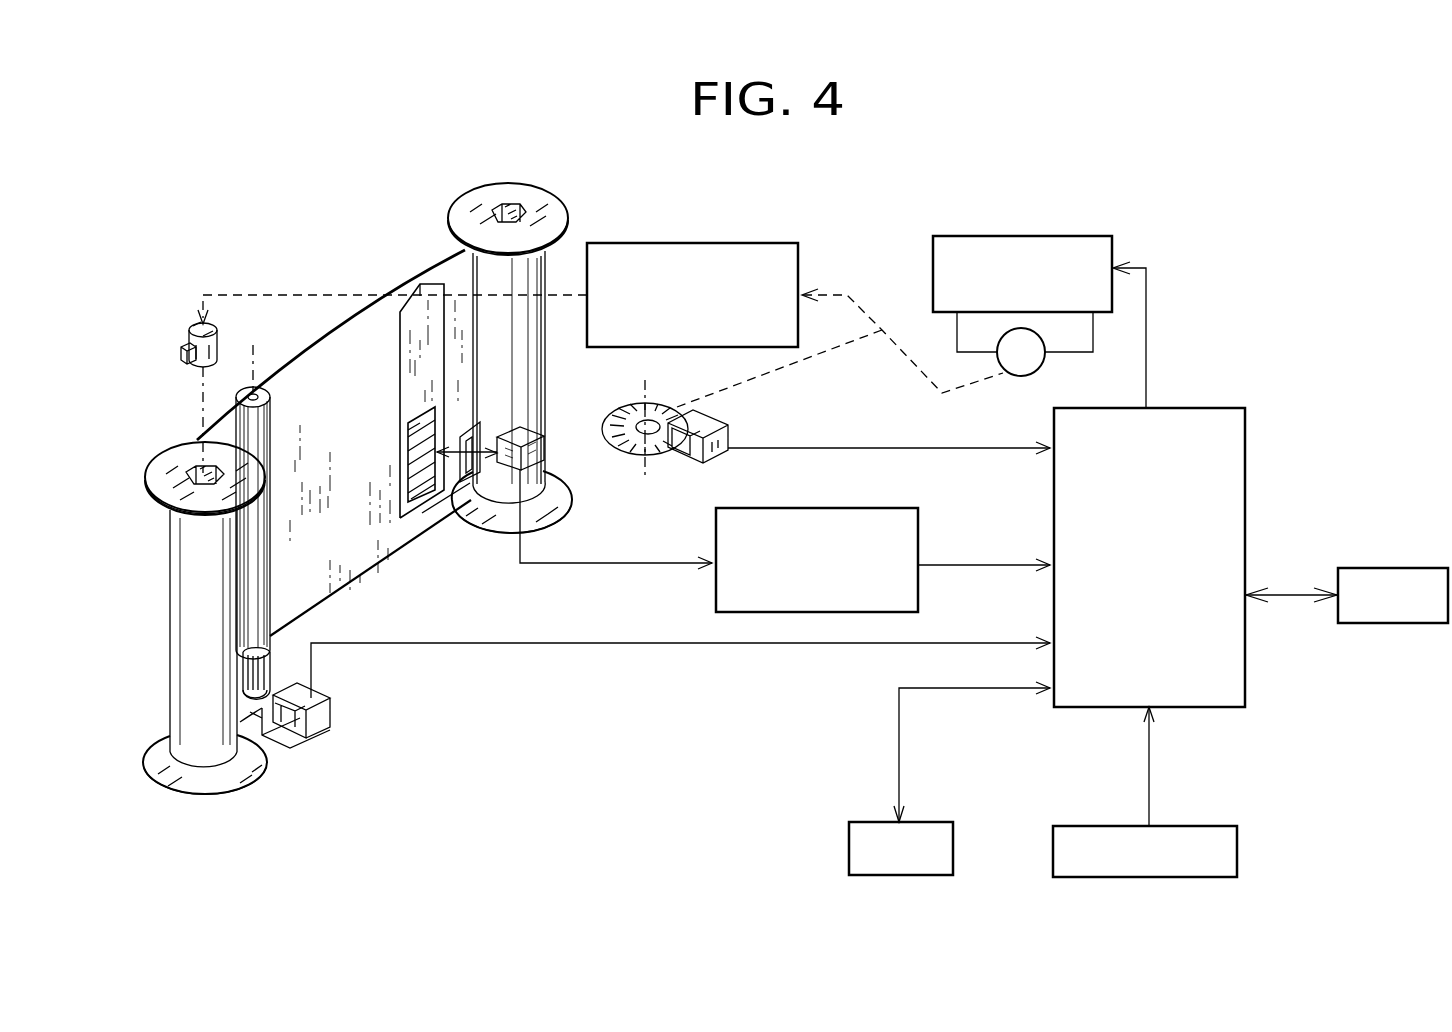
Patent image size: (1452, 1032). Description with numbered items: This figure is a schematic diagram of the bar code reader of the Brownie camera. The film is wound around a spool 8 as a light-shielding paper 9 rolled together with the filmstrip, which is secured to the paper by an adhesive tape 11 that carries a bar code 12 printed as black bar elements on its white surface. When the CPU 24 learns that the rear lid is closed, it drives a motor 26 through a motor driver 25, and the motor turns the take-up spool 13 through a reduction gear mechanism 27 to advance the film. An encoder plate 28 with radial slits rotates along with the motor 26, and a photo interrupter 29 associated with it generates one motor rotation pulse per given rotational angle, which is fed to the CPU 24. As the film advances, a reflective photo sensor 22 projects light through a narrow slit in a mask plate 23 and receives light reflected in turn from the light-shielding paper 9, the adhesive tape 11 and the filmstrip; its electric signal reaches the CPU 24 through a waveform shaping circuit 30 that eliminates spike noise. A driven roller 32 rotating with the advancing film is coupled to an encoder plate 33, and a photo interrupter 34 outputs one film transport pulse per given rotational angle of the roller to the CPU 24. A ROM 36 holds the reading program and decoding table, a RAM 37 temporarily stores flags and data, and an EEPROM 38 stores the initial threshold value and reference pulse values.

The spool 8 is at (507, 188).
The light-shielding paper 9 is at (362, 575).
The adhesive tape 11 is at (407, 364).
The bar code 12 is at (407, 447).
The take-up spool 13 is at (165, 462).
The reflective photo sensor 22 is at (538, 433).
The mask plate 23 is at (470, 432).
The CPU 24 is at (1207, 408).
The motor driver 25 is at (1030, 237).
The motor 26 is at (1005, 375).
The reduction gear mechanism 27 is at (695, 245).
The encoder plate 28 is at (612, 456).
The photo interrupter 29 is at (688, 464).
The waveform shaping circuit 30 is at (918, 514).
The driven roller 32 is at (265, 543).
The encoder plate 33 is at (268, 735).
The photo interrupter 34 is at (333, 716).
The ROM 36 is at (1394, 567).
The RAM 37 is at (938, 822).
The EEPROM 38 is at (1225, 826).